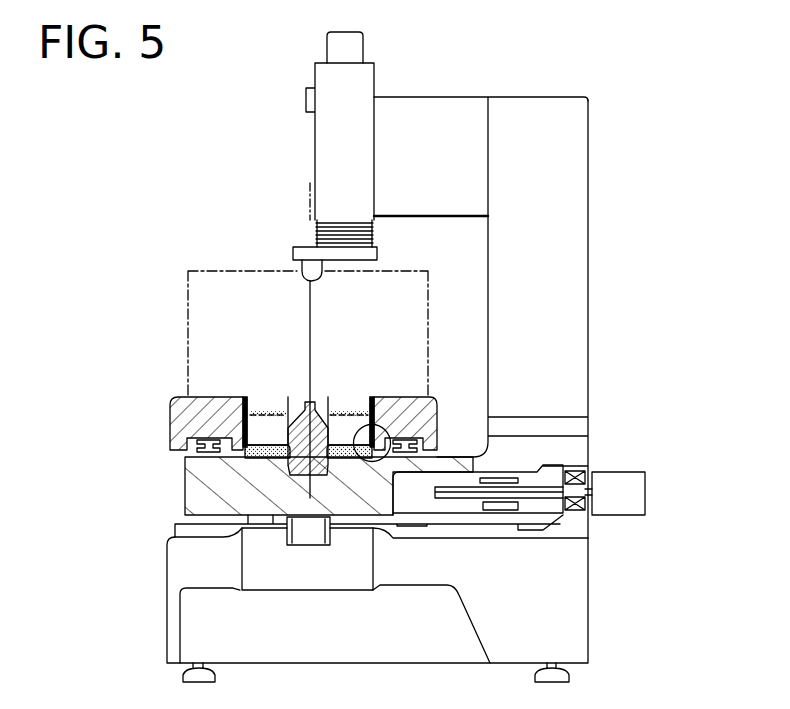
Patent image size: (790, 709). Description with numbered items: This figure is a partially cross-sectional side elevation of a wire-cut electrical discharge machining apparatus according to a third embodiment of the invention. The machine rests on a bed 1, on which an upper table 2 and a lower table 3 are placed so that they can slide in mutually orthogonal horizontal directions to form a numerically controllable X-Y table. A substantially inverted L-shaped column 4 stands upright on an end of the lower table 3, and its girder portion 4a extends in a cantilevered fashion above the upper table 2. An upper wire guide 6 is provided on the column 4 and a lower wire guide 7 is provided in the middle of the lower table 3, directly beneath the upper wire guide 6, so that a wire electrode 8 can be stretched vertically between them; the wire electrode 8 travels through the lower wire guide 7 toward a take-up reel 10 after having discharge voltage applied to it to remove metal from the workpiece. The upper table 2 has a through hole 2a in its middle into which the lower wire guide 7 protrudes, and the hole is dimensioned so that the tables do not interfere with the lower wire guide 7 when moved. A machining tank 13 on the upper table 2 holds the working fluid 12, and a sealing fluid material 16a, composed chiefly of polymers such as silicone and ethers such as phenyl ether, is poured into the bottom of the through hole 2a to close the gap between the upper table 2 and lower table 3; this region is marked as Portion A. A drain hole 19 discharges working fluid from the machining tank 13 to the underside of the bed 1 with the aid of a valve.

The bed 1 is at (172, 611).
The upper table 2 is at (181, 418).
The through hole 2a is at (253, 403).
The lower table 3 is at (200, 493).
The column 4 is at (577, 333).
The girder portion 4a is at (428, 118).
The upper wire guide 6 is at (301, 263).
The lower wire guide 7 is at (328, 403).
The wire electrode 8 is at (311, 287).
The take-up reel 10 is at (343, 398).
The working fluid 12 is at (285, 403).
The machining tank 13 is at (203, 326).
The sealing fluid material 16a is at (270, 401).
The drain hole 19 is at (629, 478).
The Portion A is at (373, 398).